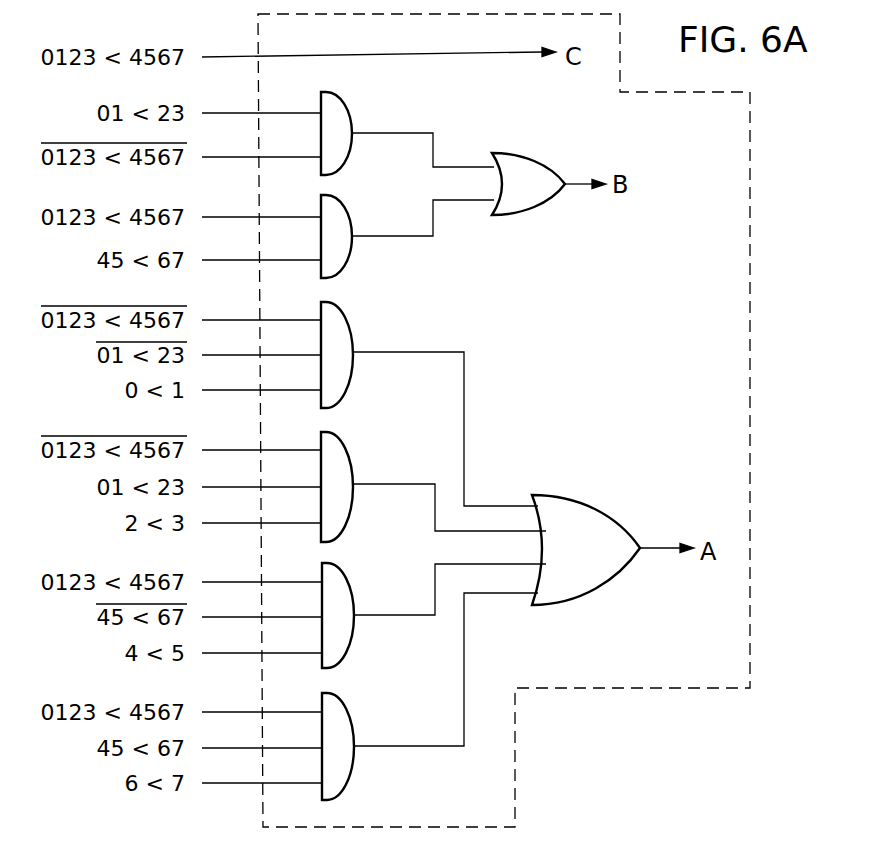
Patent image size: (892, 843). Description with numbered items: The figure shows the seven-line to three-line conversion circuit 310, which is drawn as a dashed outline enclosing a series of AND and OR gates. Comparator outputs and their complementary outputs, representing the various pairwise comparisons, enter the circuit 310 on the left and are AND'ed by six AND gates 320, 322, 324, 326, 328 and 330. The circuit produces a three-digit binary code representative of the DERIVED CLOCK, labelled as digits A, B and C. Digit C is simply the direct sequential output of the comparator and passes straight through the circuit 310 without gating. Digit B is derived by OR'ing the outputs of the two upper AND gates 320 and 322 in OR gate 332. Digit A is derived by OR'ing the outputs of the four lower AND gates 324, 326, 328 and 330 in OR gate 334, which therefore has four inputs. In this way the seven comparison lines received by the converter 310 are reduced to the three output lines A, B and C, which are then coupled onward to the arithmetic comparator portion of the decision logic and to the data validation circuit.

The 7-line to 3-line converter 310 is at (753, 288).
The AND gate 320 is at (345, 106).
The AND gate 322 is at (347, 258).
The AND gate 324 is at (350, 375).
The AND gate 326 is at (346, 455).
The AND gate 328 is at (346, 578).
The AND gate 330 is at (346, 713).
The OR gate 332 is at (530, 152).
The OR gate 334 is at (576, 494).